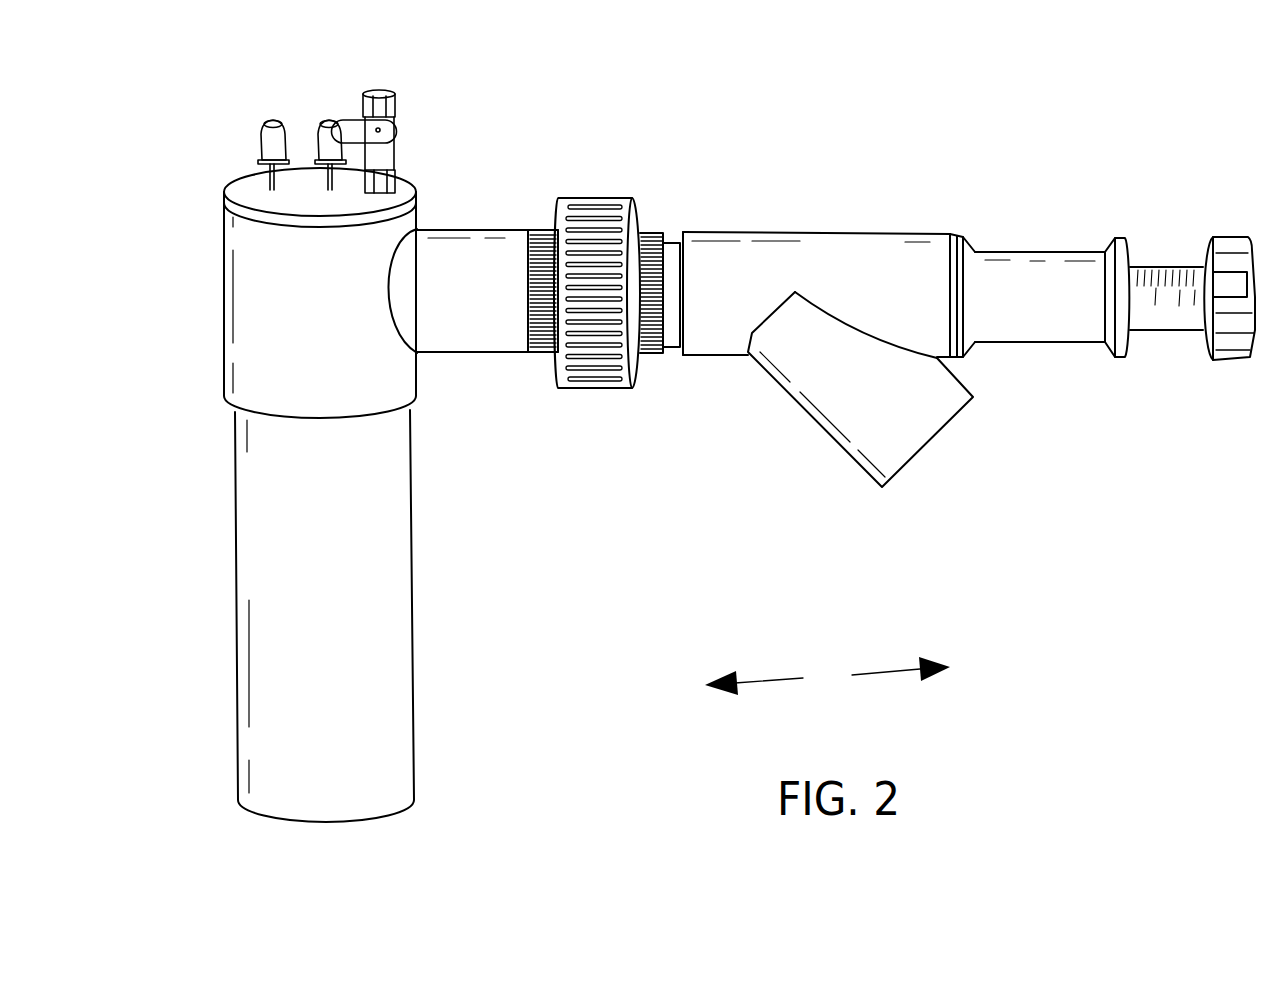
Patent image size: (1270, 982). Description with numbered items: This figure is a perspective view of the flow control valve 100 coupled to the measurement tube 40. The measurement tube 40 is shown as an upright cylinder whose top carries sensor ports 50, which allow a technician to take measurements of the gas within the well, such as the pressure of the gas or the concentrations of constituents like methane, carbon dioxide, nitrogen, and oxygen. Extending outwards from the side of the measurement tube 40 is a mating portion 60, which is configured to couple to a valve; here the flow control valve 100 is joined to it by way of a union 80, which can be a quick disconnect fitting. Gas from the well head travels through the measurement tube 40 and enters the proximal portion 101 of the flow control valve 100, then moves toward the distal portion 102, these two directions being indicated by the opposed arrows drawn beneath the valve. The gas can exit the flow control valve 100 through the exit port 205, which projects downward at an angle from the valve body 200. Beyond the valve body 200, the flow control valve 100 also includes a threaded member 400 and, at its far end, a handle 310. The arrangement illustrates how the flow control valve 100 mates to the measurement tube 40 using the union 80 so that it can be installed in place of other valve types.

The measurement tube 40 is at (205, 648).
The sensor ports 50 is at (231, 99).
The mating portion 60 is at (463, 229).
The union 80 is at (607, 176).
The flow control valve 100 is at (1089, 505).
The proximal portion 101 is at (754, 676).
The distal portion 102 is at (901, 666).
The valve body 200 is at (825, 204).
The exit port 205 is at (822, 435).
The handle 310 is at (1238, 206).
The threaded member 400 is at (1045, 223).